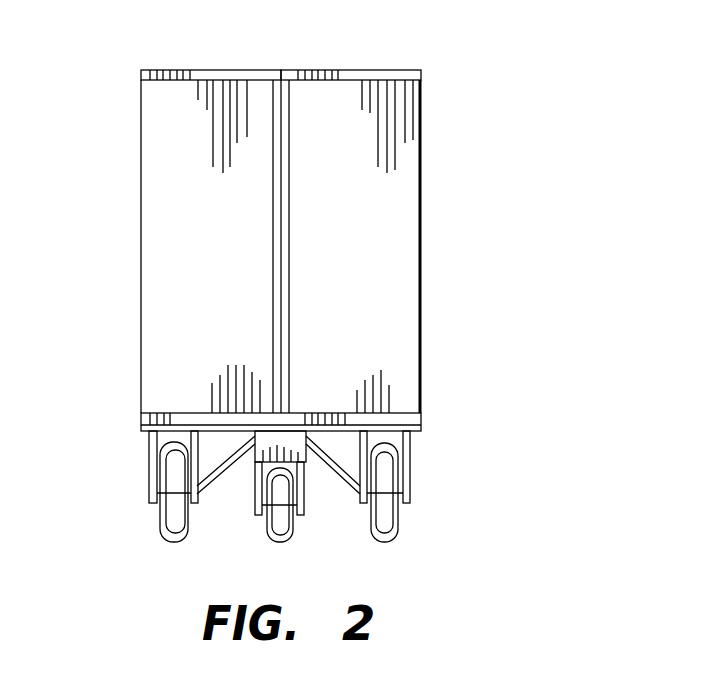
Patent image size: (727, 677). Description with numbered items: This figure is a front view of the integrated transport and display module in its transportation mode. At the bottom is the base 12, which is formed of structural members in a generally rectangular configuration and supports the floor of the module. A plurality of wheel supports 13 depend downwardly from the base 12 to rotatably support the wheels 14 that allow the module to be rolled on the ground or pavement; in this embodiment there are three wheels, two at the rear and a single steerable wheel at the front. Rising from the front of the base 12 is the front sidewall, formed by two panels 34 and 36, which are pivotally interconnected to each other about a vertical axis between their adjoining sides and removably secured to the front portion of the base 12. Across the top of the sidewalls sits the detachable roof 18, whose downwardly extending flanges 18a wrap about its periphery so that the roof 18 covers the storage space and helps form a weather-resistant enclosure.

The base 12 is at (192, 412).
The wheel supports 13 is at (258, 503).
The wheels 14 is at (172, 473).
The roof 18 is at (225, 70).
The downwardly extending flanges 18a is at (368, 77).
The front sidewall panel 34 is at (167, 226).
The front sidewall panel 36 is at (407, 242).